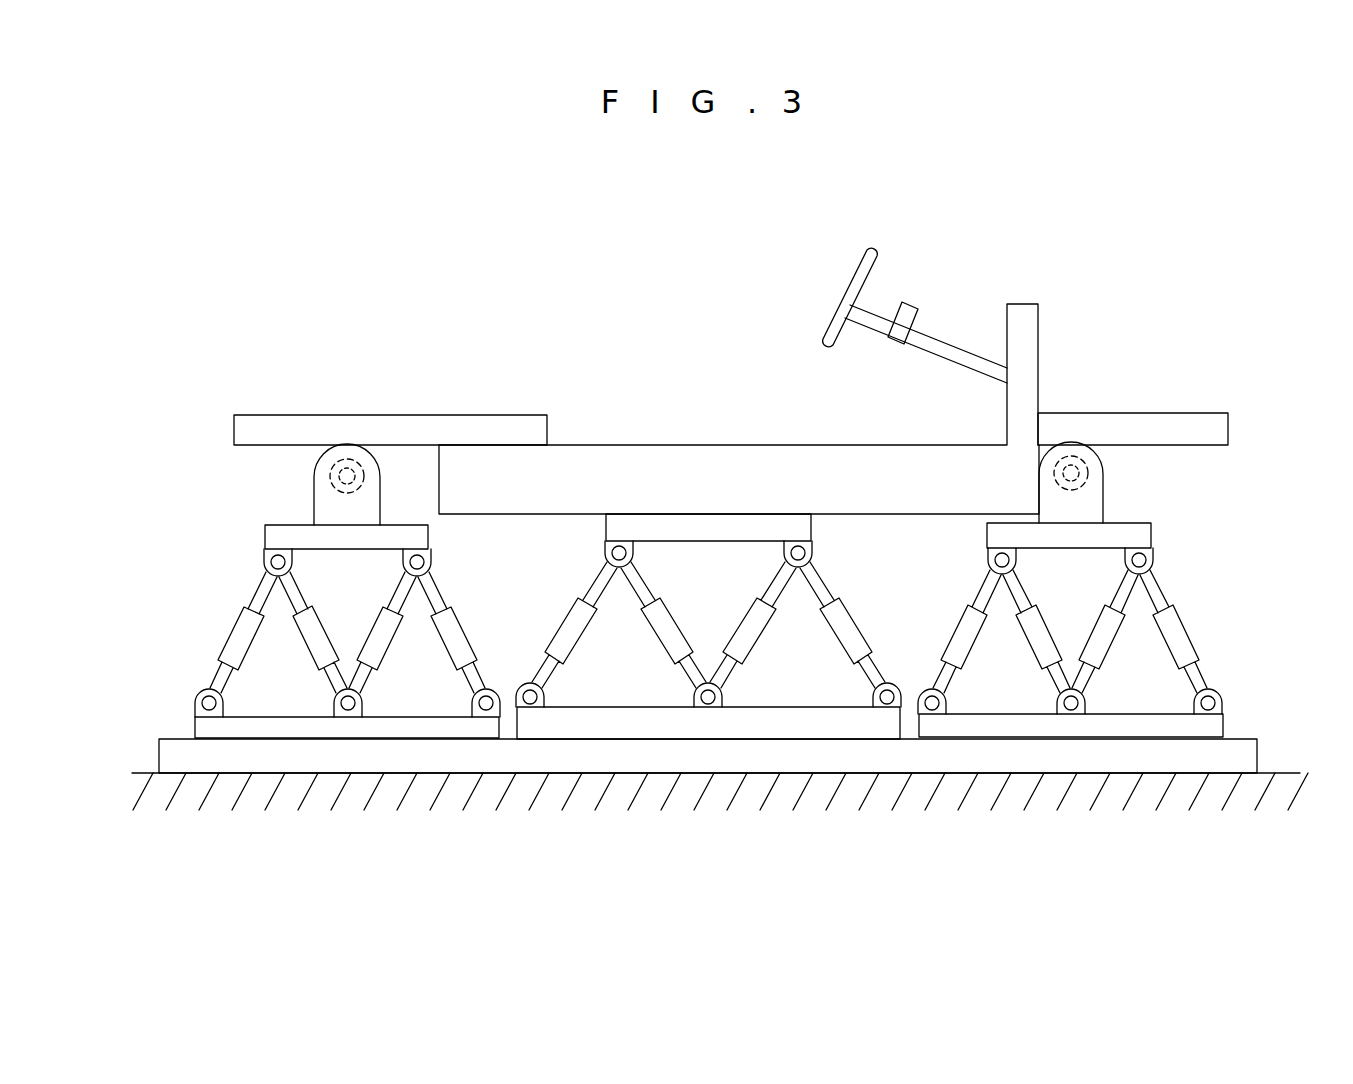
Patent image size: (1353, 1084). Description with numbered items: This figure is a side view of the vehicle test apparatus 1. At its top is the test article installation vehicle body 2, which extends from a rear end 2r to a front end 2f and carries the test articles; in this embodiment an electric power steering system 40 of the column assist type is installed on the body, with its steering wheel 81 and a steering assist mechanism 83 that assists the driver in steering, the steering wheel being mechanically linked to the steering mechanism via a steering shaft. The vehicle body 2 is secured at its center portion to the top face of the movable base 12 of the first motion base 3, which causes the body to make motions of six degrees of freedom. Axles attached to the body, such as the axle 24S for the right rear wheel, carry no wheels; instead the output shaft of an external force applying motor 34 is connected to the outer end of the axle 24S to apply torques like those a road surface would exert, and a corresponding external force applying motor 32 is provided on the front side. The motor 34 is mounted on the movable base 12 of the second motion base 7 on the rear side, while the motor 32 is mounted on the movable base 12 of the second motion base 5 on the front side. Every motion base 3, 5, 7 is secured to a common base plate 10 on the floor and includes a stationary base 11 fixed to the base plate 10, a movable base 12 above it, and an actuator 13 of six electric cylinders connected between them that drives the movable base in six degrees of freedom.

The vehicle test apparatus 1 is at (757, 287).
The test article installation vehicle body 2 is at (661, 445).
The rear end 2r is at (234, 430).
The front end 2f is at (1228, 428).
The first motion base 3 is at (577, 588).
The second motion base 5 is at (1278, 737).
The second motion base 7 is at (138, 518).
The base plate 10 is at (1258, 755).
The stationary base 11 is at (203, 730).
The movable base 12 is at (275, 537).
The actuator 13 is at (191, 557).
The axle 24S is at (347, 474).
The external force applying motor 32 is at (1105, 487).
The external force applying motor 34 is at (314, 488).
The electric power steering system 40 is at (906, 362).
The steering wheel 81 is at (829, 342).
The steering assist mechanism 83 is at (907, 311).